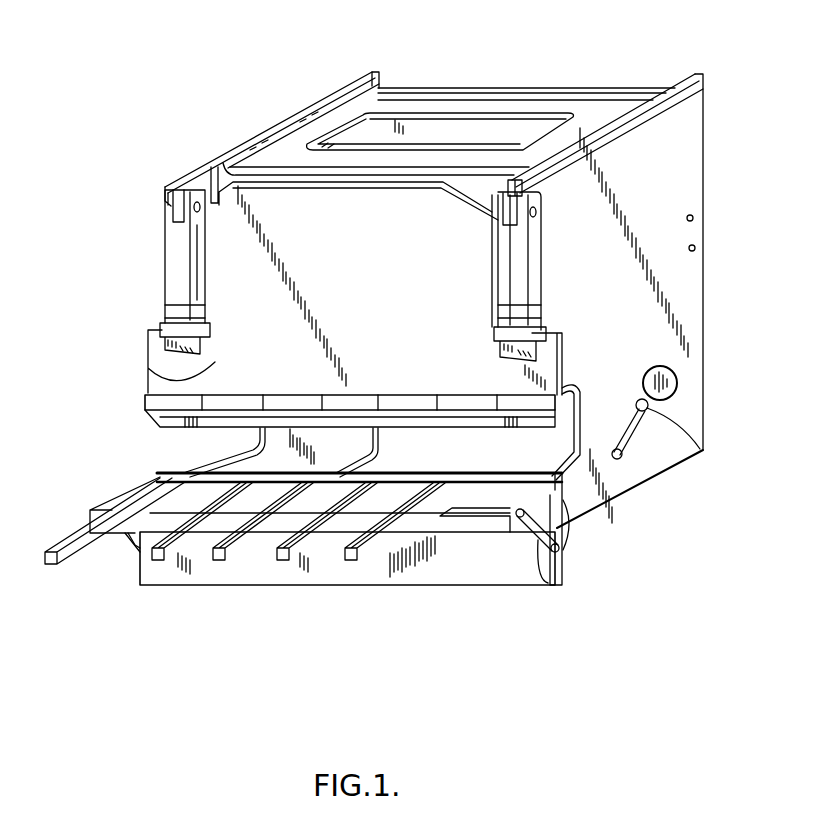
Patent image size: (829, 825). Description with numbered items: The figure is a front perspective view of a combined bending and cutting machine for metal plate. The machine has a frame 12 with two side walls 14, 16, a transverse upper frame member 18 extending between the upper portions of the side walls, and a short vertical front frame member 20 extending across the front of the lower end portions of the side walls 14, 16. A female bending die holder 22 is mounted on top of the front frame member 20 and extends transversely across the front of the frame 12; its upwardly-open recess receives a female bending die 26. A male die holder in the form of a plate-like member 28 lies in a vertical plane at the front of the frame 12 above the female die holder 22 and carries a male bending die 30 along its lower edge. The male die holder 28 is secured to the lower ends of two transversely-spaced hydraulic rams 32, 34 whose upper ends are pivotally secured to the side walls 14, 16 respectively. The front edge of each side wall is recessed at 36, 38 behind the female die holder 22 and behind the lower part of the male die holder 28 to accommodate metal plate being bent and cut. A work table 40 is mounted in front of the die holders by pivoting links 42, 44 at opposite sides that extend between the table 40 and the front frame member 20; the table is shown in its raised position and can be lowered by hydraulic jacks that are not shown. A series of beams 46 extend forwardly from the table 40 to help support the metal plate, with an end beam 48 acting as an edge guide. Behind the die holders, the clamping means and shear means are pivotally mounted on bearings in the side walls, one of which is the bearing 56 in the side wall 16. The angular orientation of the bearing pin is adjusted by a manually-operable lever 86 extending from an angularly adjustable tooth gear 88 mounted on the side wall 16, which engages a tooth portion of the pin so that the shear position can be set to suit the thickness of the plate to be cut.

The frame 12 is at (233, 138).
The side wall 14 is at (303, 108).
The side wall 16 is at (696, 142).
The transverse upper frame member 18 is at (478, 88).
The front frame member 20 is at (462, 570).
The female bending die holder 22 is at (567, 535).
The female bending die 26 is at (630, 495).
The male die holder 28 is at (148, 375).
The male bending die 30 is at (170, 423).
The hydraulic ram 32 is at (167, 267).
The hydraulic ram 34 is at (513, 270).
The recess 36 is at (233, 447).
The recess 38 is at (570, 452).
The work table 40 is at (127, 503).
The pivoting link 42 is at (133, 545).
The pivoting link 44 is at (558, 580).
The beams 46 is at (275, 557).
The end beam 48 is at (75, 558).
The bearing 56 is at (677, 390).
The manually-operable lever 86 is at (630, 437).
The tooth gear 88 is at (700, 449).